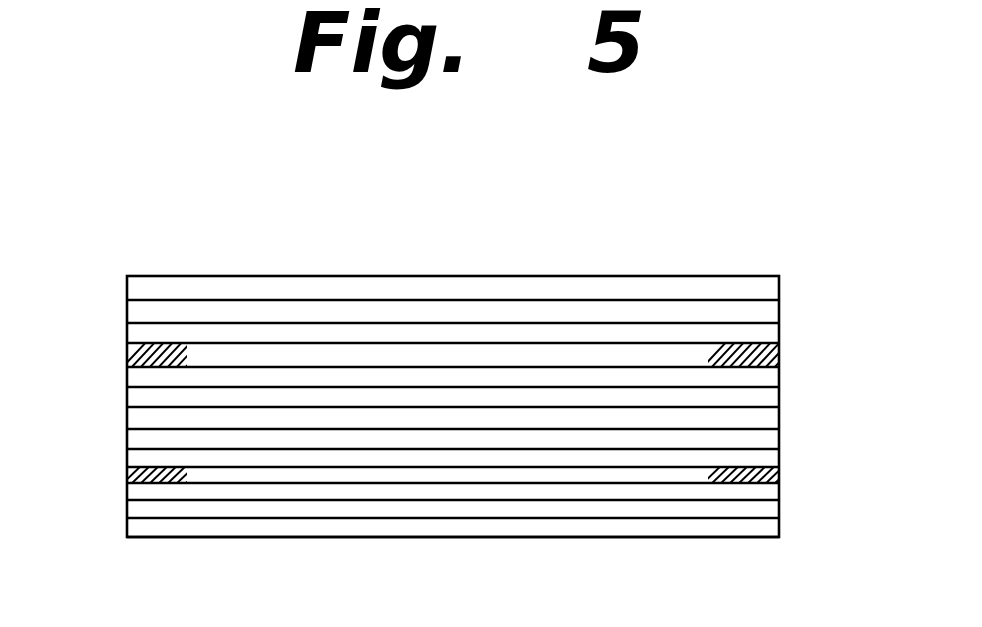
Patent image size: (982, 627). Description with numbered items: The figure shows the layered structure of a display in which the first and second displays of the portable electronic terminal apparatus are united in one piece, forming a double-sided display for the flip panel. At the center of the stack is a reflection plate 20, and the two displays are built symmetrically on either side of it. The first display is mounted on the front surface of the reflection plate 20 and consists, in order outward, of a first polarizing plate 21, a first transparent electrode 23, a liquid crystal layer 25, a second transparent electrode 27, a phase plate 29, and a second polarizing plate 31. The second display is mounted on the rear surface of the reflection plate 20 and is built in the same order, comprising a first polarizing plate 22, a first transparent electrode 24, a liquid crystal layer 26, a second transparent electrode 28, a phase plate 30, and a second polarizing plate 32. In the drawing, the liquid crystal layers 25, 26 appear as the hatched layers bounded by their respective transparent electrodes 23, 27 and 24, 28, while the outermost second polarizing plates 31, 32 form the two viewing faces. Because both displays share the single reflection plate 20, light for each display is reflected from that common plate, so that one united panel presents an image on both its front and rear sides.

The reflection plate 20 is at (762, 418).
The first polarizing plate 21 is at (140, 397).
The first polarizing plate 22 is at (140, 432).
The first transparent electrode 23 is at (762, 377).
The first transparent electrode 24 is at (140, 457).
The liquid crystal layer 25 is at (780, 351).
The liquid crystal layer 26 is at (780, 474).
The second transparent electrode 27 is at (140, 335).
The second transparent electrode 28 is at (140, 494).
The phase plate 29 is at (140, 310).
The phase plate 30 is at (762, 512).
The second polarizing plate 31 is at (762, 288).
The second polarizing plate 32 is at (758, 533).